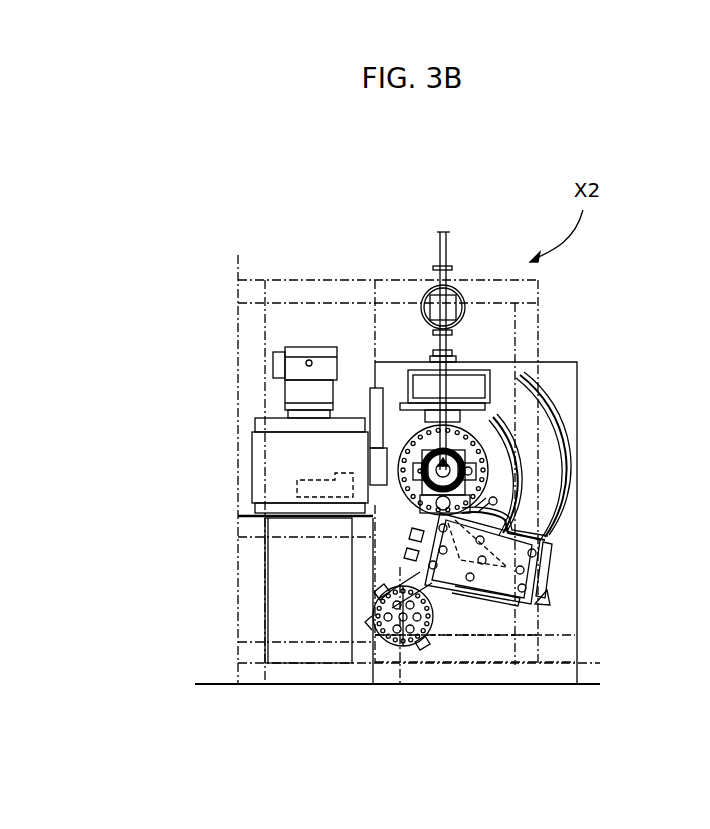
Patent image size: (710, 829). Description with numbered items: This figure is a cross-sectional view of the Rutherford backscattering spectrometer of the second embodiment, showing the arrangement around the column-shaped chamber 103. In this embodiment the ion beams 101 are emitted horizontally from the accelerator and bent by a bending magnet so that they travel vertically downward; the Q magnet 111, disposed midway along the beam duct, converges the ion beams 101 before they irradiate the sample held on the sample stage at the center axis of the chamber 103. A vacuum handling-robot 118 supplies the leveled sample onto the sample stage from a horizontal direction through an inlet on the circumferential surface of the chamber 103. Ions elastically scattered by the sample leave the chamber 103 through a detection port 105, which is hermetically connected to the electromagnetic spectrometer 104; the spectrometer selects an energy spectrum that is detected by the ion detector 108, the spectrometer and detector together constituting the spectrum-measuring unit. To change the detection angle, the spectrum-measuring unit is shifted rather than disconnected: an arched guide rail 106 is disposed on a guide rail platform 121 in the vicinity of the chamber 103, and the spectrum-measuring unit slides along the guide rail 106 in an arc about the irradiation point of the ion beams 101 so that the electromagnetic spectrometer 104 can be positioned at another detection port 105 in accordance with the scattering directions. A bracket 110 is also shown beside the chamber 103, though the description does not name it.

The ion beams 101 is at (437, 343).
The chamber 103 is at (430, 493).
The electromagnetic spectrometer 104 is at (547, 562).
The detection port 105 is at (500, 501).
The guide rail 106 is at (518, 457).
The ion detector 108 is at (416, 648).
The support bracket 110 is at (380, 375).
The Q magnet 111 is at (472, 367).
The vacuum handling-robot 118 is at (308, 343).
The guide rail platform 121 is at (527, 362).